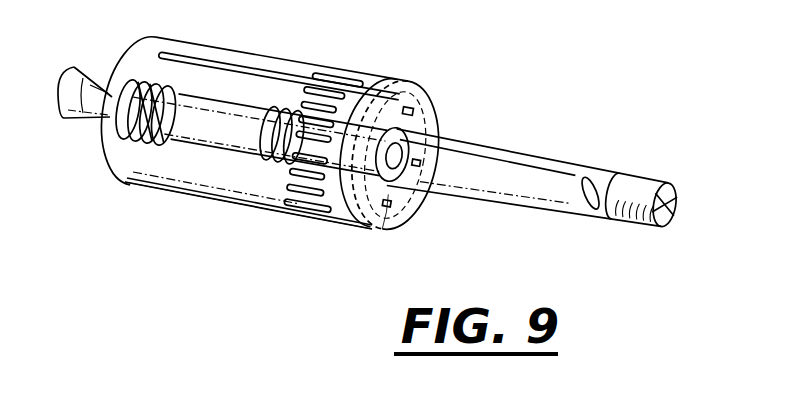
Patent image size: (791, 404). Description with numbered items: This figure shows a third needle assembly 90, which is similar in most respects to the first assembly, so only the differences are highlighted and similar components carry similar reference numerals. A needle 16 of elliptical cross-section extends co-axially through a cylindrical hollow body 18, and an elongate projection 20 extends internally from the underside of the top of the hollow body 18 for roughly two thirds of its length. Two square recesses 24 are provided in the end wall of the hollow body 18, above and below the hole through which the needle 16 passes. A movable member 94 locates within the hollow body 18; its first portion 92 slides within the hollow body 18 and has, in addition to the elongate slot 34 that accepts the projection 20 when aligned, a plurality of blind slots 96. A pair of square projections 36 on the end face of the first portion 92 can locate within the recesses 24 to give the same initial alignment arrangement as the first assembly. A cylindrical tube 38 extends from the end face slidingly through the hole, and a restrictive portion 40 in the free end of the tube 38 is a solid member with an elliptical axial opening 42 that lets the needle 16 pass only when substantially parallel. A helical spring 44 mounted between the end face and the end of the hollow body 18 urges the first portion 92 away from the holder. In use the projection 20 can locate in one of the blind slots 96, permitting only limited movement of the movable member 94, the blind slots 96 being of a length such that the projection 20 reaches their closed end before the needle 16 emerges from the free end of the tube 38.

The third needle assembly 90 is at (168, 223).
The hollow body 18 is at (207, 197).
The elongate projection 20 is at (164, 52).
The helical spring 44 is at (119, 181).
The elongate slot 34 is at (330, 215).
The blind slots 96 is at (330, 80).
The first portion 92 is at (394, 82).
The movable member 94 is at (415, 215).
The square projections 36 is at (424, 160).
The square recesses 24 is at (388, 210).
The cylindrical tube 38 is at (556, 165).
The needle 16 is at (577, 194).
The restrictive portion 40 is at (646, 188).
The elliptical axial opening 42 is at (673, 214).